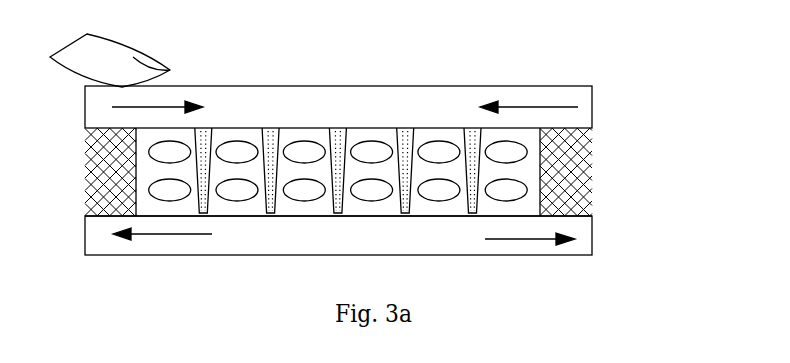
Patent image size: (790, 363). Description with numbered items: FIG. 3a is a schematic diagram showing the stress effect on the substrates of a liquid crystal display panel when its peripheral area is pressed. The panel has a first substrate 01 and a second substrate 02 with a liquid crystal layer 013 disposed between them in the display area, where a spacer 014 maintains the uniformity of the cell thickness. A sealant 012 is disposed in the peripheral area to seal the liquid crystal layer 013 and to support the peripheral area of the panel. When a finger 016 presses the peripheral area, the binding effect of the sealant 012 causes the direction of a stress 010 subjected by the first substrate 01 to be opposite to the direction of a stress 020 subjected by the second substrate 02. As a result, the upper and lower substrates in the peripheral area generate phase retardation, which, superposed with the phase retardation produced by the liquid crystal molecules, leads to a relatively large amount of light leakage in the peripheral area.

The finger 016 is at (147, 62).
The first substrate 01 is at (582, 117).
The stress 010 is at (545, 107).
The spacer 014 is at (470, 138).
The sealant 012 is at (587, 162).
The liquid crystal layer 013 is at (522, 190).
The second substrate 02 is at (580, 238).
The stress 020 is at (523, 238).